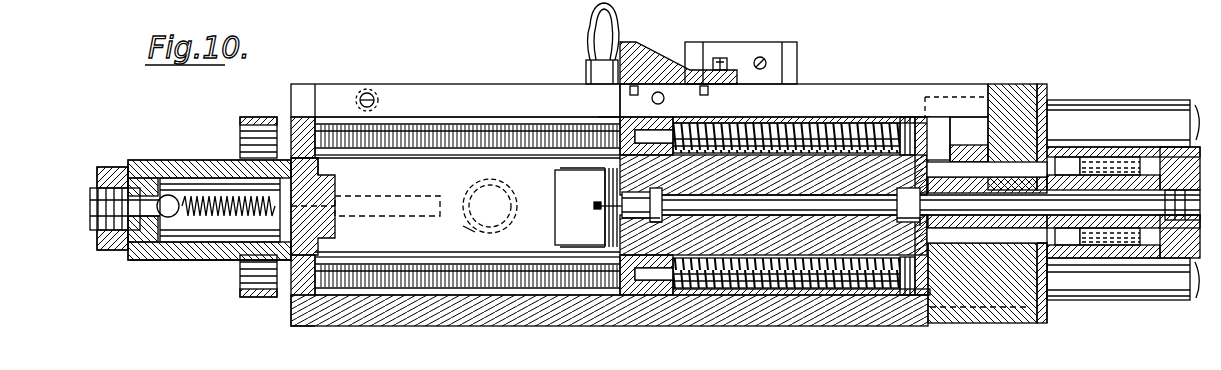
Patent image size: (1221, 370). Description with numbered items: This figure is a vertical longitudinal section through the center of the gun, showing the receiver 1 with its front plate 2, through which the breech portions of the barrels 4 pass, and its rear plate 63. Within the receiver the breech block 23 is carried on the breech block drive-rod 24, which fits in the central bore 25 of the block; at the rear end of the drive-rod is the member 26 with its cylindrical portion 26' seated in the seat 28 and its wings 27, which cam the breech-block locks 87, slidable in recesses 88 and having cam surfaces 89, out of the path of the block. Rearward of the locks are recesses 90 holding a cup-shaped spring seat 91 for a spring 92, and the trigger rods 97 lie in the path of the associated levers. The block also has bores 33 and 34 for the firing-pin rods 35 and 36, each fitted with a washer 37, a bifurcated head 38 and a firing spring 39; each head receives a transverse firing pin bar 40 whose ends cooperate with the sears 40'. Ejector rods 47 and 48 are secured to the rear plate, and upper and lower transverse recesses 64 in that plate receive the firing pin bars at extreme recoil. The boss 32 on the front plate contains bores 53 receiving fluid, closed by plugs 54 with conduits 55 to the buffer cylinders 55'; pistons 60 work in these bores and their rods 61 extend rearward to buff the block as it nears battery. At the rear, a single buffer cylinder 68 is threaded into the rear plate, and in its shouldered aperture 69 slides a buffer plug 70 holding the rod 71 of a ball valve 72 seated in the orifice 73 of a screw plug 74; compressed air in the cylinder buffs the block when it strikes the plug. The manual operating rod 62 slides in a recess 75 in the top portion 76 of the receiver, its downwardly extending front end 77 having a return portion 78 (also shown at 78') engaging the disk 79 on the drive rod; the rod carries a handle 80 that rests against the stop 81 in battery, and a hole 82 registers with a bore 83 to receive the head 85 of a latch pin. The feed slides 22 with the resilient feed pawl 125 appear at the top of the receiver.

The receiver 1 is at (486, 327).
The front plate 2 is at (1043, 325).
The barrels 4 is at (1108, 106).
The feed slides 22 is at (797, 48).
The breech block 23 is at (773, 205).
The breech block drive-rod 24 is at (820, 217).
The central bore 25 is at (813, 196).
The member 26 is at (669, 195).
The cylindrical portion 26' is at (674, 230).
The wings 27 is at (633, 204).
The seat 28 is at (638, 226).
The boss 32 is at (1152, 232).
The bore 33 is at (855, 123).
The bore 34 is at (865, 287).
The firing-pin rod 35 is at (810, 123).
The firing-pin rod 36 is at (790, 283).
The washer 37 is at (907, 120).
The bifurcated head 38 is at (640, 121).
The firing spring 39 is at (742, 122).
The firing pin bar 40 is at (626, 205).
The sears 40' is at (602, 107).
The ejector rod 47 is at (410, 159).
The ejector rod 48 is at (405, 257).
The bores 53 is at (1105, 160).
The plugs 54 is at (1175, 158).
The conduits 55 is at (1123, 199).
The buffer cylinders 55' is at (1185, 215).
The pistons 60 is at (1066, 160).
The rods 61 is at (1003, 170).
The manual operating rod 62 is at (882, 88).
The rear plate 63 is at (292, 328).
The transverse recesses 64 is at (292, 120).
The buffer cylinder 68 is at (215, 260).
The shouldered aperture 69 is at (320, 168).
The buffer plug 70 is at (336, 187).
The rod 71 is at (218, 178).
The ball valve 72 is at (172, 216).
The orifice 73 is at (152, 166).
The screw plug 74 is at (112, 251).
The recess 75 is at (527, 90).
The top portion 76 is at (470, 86).
The front end 77 is at (969, 139).
The return portion 78 is at (938, 146).
The block 78' is at (898, 233).
The disk 79 is at (910, 190).
The handle 80 is at (592, 13).
The stop 81 is at (630, 46).
The hole 82 is at (664, 99).
The bore 83 is at (378, 100).
The head 85 is at (363, 93).
The breech-block locks 87 is at (556, 174).
The recesses 88 is at (556, 221).
The cam surfaces 89 is at (598, 209).
The recesses 90 is at (465, 226).
The spring seat 91 is at (470, 188).
The spring 92 is at (490, 206).
The trigger rods 97 is at (375, 218).
The feed pawl 125 is at (750, 44).